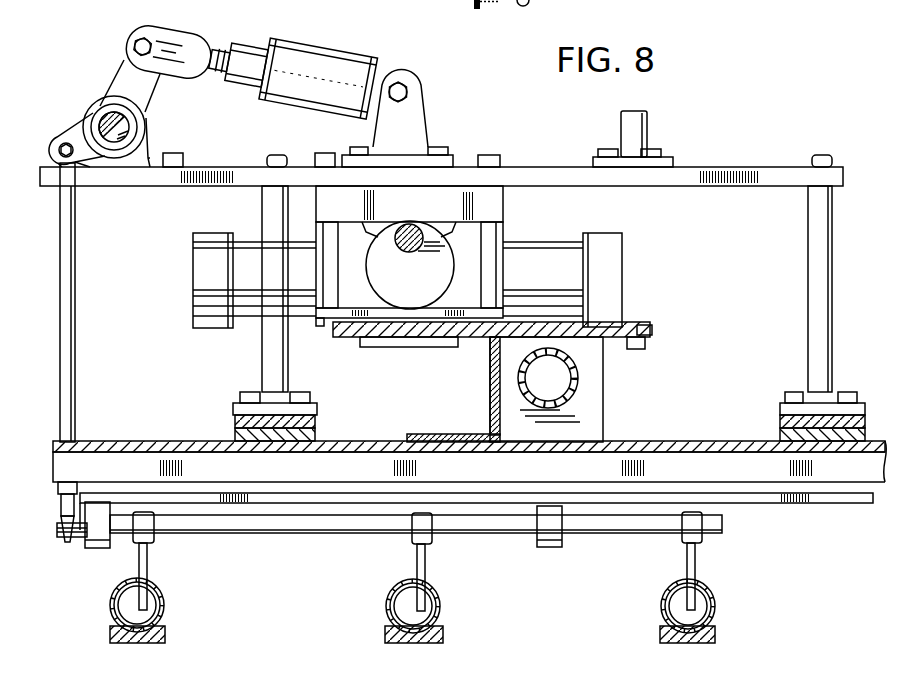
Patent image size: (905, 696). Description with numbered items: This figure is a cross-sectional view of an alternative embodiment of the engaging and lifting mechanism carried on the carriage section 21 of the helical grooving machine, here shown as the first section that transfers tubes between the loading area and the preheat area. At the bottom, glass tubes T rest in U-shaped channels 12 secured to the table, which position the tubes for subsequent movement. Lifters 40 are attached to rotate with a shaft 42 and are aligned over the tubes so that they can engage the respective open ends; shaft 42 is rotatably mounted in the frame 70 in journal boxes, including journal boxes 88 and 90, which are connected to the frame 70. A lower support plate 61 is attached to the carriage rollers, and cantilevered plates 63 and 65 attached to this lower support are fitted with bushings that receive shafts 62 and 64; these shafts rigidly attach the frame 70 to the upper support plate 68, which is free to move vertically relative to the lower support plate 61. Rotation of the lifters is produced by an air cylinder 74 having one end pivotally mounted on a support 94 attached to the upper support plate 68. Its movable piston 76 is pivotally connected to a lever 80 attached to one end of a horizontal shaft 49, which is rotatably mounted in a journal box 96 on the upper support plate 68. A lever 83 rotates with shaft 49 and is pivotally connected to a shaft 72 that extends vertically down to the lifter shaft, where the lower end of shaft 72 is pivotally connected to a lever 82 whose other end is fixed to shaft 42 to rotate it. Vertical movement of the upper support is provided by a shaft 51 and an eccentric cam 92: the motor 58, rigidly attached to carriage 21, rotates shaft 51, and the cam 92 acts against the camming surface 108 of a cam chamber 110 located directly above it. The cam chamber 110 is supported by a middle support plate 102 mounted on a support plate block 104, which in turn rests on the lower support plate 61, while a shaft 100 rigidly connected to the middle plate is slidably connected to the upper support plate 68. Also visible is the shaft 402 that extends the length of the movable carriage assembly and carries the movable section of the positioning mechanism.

The U-shaped channel 12 is at (110, 640).
The carriage section 21 is at (110, 438).
The lifter 40 is at (147, 572).
The shaft 42 is at (288, 525).
The horizontal shaft 49 is at (129, 127).
The shaft 51 is at (405, 253).
The motor 58 is at (205, 293).
The lower support plate 61 is at (183, 441).
The shaft 62 is at (815, 297).
The cantilevered plate 63 is at (783, 425).
The shaft 64 is at (275, 352).
The cantilevered plate 65 is at (310, 418).
The upper support plate 68 is at (565, 170).
The frame 70 is at (788, 503).
The shaft 72 is at (72, 272).
The air cylinder 74 is at (348, 56).
The movable piston 76 is at (225, 80).
The lever 80 is at (128, 68).
The lever 82 is at (70, 533).
The lever 83 is at (78, 137).
The journal box 88 is at (102, 548).
The journal box 90 is at (553, 548).
The eccentric cam 92 is at (382, 277).
The support 94 is at (428, 118).
The journal box 96 is at (90, 106).
The shaft 100 is at (638, 250).
The middle support plate 102 is at (650, 328).
The support plate block 104 is at (600, 430).
The camming surface 108 is at (391, 232).
The cam chamber 110 is at (495, 203).
The shaft 402 is at (585, 380).
The glass tube T is at (164, 605).